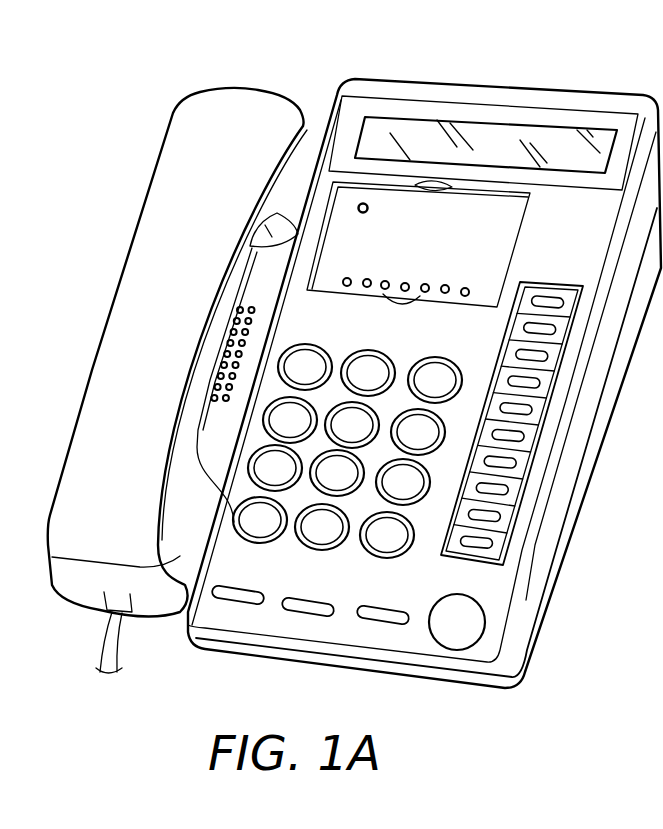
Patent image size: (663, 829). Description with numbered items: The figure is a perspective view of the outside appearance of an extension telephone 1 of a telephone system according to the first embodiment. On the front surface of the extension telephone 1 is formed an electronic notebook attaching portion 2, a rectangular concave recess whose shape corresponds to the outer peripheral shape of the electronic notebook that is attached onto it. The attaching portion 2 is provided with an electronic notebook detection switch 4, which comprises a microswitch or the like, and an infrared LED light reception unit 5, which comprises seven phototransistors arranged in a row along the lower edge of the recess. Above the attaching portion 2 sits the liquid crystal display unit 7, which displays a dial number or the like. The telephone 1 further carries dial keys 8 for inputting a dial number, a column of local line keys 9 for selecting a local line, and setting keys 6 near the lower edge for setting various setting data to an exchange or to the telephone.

The extension telephone 1 is at (397, 82).
The electronic notebook attaching portion 2 is at (536, 226).
The electronic notebook detection switch 4 is at (344, 199).
The infrared LED light reception unit 5 is at (365, 297).
The setting keys 6 is at (305, 613).
The liquid crystal display unit 7 is at (563, 137).
The dial keys 8 is at (303, 546).
The local line keys 9 is at (500, 546).